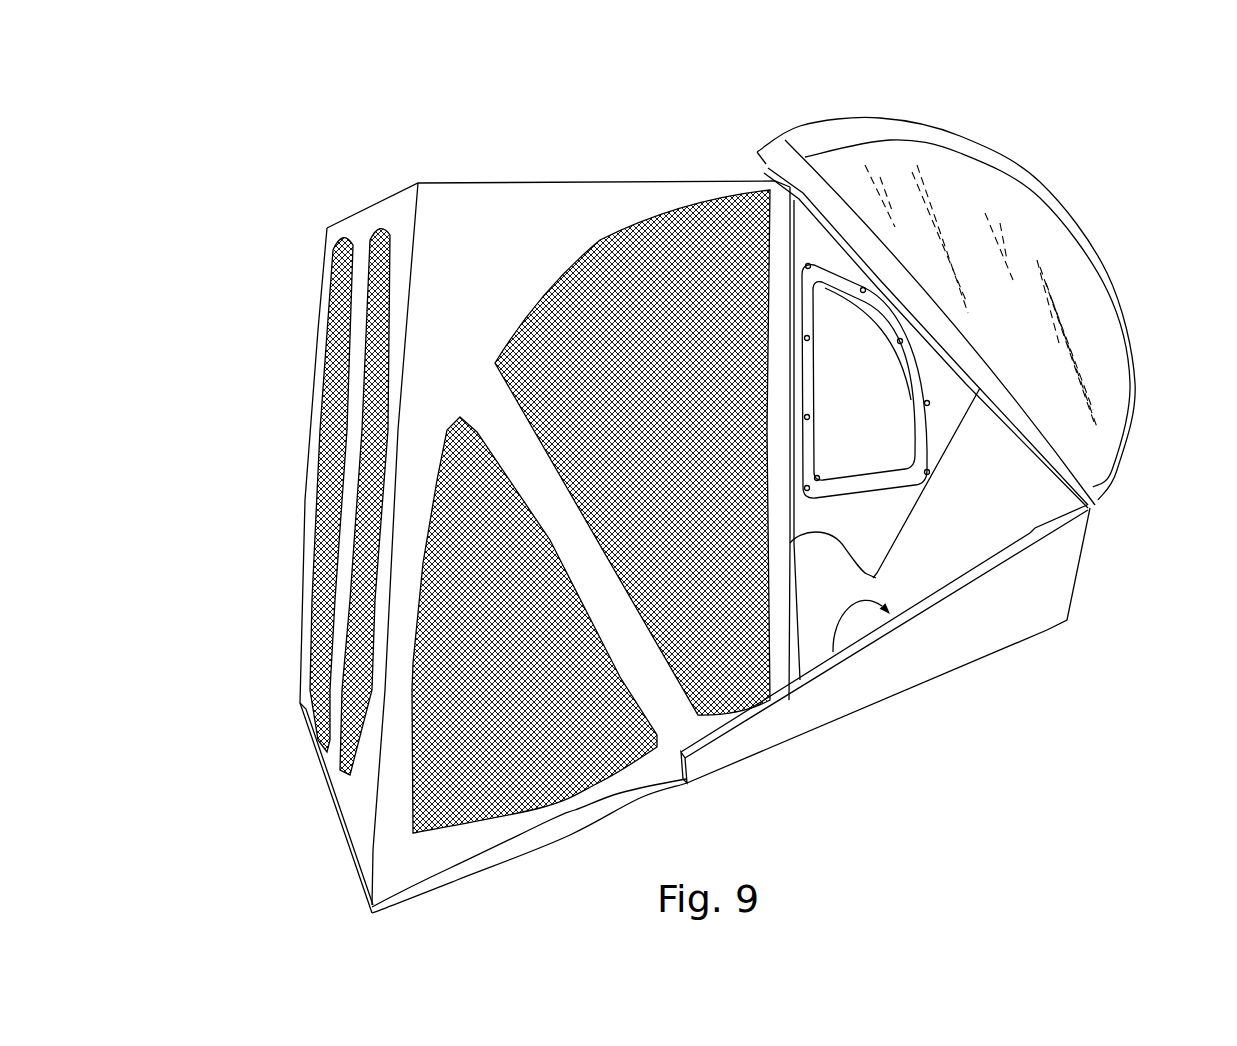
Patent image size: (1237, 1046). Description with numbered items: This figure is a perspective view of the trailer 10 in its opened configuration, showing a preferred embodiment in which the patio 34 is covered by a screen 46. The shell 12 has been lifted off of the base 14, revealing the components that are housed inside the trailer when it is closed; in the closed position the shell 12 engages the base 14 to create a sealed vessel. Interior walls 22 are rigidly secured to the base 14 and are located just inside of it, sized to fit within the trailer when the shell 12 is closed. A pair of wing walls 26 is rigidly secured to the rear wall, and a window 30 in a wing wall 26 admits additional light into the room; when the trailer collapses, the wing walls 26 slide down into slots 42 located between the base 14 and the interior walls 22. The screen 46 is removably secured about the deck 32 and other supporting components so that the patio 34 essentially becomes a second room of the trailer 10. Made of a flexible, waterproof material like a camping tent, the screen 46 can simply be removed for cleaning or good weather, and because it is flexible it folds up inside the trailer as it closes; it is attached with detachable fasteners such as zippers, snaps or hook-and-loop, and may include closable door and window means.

The trailer 10 is at (283, 164).
The shell 12 is at (1050, 257).
The base 14 is at (1048, 588).
The interior walls 22 is at (957, 543).
The wing walls 26 is at (885, 532).
The window 30 is at (835, 322).
The deck 32 is at (548, 835).
The patio 34 is at (293, 273).
The slots 42 is at (833, 652).
The screen 46 is at (502, 248).